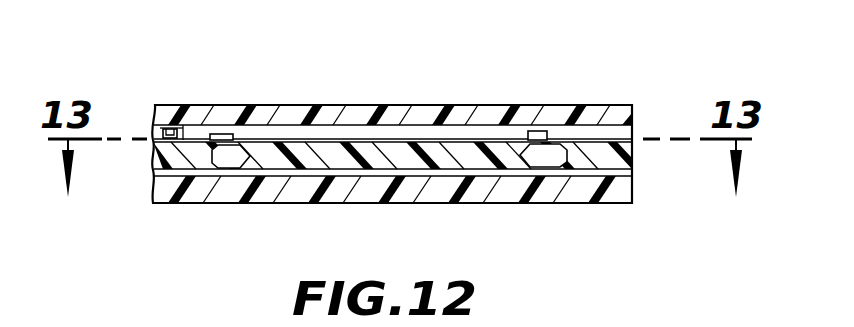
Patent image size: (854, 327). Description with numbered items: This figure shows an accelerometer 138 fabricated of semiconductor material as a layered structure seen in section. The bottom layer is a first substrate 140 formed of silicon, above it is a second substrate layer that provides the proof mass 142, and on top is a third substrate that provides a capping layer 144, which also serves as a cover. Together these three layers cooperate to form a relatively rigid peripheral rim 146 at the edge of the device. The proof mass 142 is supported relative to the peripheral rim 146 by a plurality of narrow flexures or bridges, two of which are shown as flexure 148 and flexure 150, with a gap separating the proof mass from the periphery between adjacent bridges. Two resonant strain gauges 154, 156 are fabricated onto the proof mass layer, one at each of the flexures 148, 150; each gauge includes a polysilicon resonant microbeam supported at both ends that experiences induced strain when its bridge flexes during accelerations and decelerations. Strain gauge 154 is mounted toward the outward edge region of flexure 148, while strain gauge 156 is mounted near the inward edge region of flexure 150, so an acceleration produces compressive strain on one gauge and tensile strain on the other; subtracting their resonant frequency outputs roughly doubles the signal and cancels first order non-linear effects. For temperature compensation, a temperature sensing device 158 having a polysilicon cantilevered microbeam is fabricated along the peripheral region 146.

The accelerometer 138 is at (318, 78).
The first substrate 140 is at (366, 192).
The proof mass 142 is at (472, 153).
The capping layer 144 is at (417, 117).
The peripheral rim 146 is at (612, 158).
The flexure 148 is at (232, 143).
The flexure 150 is at (543, 143).
The resonant strain gauge 154 is at (207, 133).
The resonant strain gauge 156 is at (538, 131).
The temperature sensing device 158 is at (170, 128).